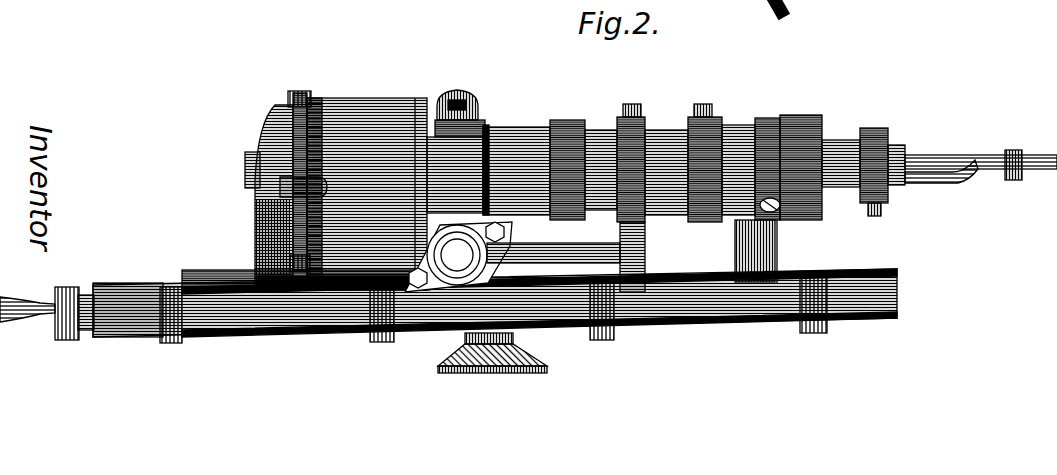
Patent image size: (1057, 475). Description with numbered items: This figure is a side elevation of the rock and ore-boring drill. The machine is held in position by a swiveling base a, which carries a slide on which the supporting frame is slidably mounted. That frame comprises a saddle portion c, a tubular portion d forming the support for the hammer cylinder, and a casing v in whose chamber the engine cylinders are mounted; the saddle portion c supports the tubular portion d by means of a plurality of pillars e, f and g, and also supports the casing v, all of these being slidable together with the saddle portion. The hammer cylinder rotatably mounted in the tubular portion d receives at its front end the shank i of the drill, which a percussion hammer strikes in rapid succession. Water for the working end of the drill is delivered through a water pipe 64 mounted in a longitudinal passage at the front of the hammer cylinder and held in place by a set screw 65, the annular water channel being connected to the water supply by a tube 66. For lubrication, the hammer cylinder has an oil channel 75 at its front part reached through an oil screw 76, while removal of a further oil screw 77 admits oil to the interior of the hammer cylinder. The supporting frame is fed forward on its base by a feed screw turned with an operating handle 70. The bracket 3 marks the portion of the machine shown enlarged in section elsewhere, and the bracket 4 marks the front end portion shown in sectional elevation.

The bracket 3 is at (591, 82).
The bracket 4 is at (1035, 95).
The oil channel 75 is at (458, 102).
The oil screw 77 is at (632, 104).
The oil screw 76 is at (705, 104).
The tubular portion d is at (660, 129).
The drill shank i is at (978, 157).
The water pipe 64 is at (980, 179).
The set screw 65 is at (882, 216).
The tube 66 is at (788, 221).
The pillar f is at (746, 247).
The pillar e is at (648, 252).
The pillar g is at (557, 227).
The casing v is at (337, 190).
The saddle portion c is at (149, 331).
The operating handle 70 is at (31, 332).
The swiveling base a is at (486, 362).